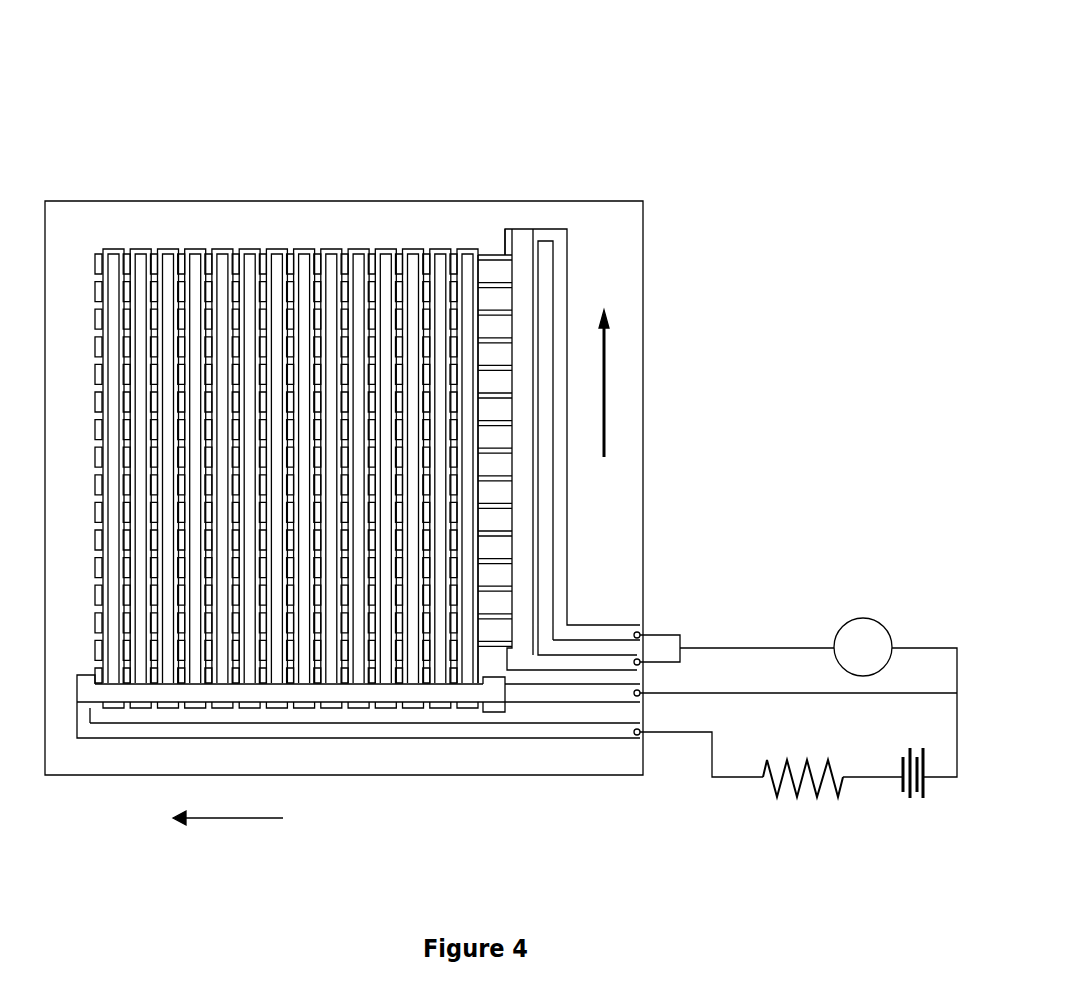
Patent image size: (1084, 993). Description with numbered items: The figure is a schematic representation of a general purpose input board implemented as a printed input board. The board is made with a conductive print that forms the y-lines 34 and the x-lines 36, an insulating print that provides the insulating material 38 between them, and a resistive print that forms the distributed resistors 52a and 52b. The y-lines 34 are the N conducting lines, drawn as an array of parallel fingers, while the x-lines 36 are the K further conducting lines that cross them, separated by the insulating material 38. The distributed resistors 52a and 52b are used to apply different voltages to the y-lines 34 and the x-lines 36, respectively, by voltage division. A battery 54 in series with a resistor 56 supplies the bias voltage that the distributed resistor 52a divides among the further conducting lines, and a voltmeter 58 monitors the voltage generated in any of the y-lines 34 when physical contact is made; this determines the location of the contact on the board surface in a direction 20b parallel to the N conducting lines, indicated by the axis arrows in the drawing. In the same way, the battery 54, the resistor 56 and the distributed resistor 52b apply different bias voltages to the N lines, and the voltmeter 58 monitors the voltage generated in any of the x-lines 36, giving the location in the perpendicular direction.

The y-lines 34 is at (118, 252).
The x-lines 36 is at (497, 268).
The insulating material 38 is at (115, 295).
The distributed resistor 52a is at (370, 690).
The distributed resistor 52b is at (524, 246).
The battery 54 is at (910, 800).
The resistor 56 is at (763, 790).
The voltmeter 58 is at (873, 612).
The direction 20b is at (391, 570).